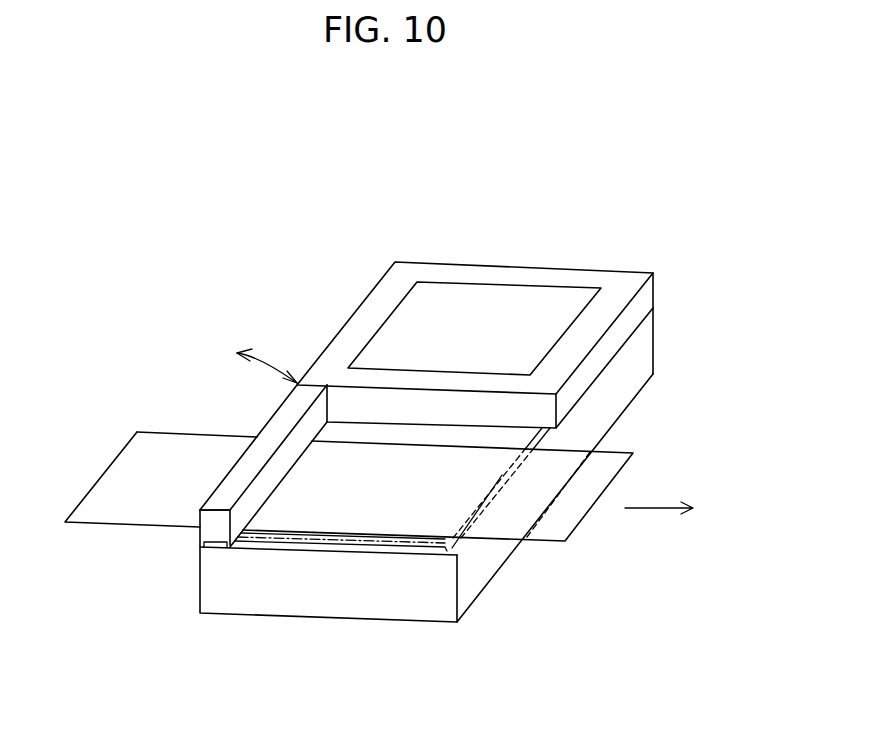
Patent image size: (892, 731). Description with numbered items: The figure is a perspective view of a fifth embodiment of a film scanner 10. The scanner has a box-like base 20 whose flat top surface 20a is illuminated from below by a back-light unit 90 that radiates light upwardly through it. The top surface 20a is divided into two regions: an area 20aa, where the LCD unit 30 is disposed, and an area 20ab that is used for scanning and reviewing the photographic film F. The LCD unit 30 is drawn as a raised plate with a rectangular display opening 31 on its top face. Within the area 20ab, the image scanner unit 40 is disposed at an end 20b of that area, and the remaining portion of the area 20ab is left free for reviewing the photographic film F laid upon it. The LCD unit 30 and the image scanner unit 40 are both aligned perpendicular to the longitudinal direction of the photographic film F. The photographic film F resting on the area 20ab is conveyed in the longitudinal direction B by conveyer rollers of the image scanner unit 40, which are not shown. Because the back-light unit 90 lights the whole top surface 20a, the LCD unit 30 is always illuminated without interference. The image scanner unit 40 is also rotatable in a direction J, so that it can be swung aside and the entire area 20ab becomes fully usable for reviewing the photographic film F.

The film scanner 10 is at (442, 218).
The body 20 is at (653, 352).
The top surface 20a is at (551, 427).
The area 20aa is at (633, 340).
The area 20ab is at (340, 553).
The end 20b is at (213, 545).
The LCD unit 30 is at (596, 267).
The opening 31 is at (515, 300).
The image scanner unit 40 is at (233, 487).
The back-light unit 90 is at (458, 545).
The photographic film F is at (610, 460).
The longitudinal direction B is at (659, 523).
The direction J is at (267, 358).